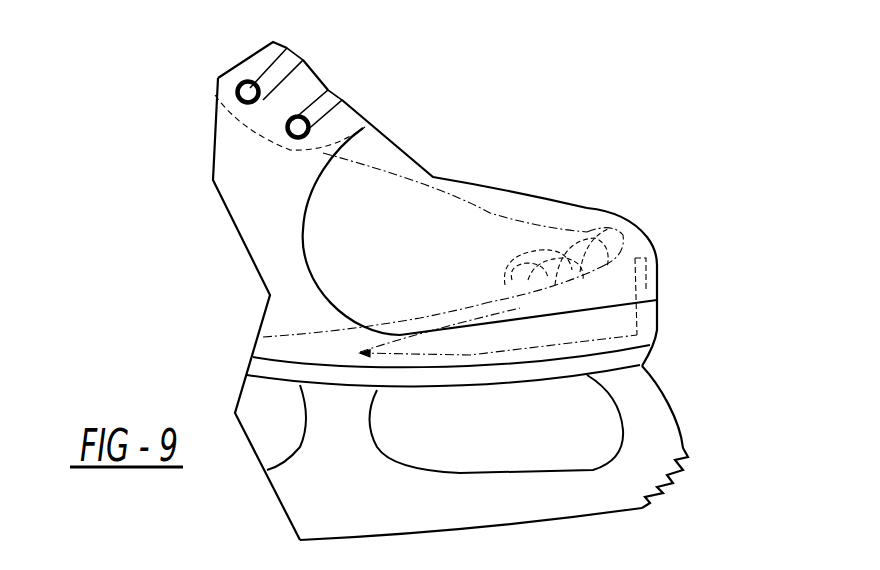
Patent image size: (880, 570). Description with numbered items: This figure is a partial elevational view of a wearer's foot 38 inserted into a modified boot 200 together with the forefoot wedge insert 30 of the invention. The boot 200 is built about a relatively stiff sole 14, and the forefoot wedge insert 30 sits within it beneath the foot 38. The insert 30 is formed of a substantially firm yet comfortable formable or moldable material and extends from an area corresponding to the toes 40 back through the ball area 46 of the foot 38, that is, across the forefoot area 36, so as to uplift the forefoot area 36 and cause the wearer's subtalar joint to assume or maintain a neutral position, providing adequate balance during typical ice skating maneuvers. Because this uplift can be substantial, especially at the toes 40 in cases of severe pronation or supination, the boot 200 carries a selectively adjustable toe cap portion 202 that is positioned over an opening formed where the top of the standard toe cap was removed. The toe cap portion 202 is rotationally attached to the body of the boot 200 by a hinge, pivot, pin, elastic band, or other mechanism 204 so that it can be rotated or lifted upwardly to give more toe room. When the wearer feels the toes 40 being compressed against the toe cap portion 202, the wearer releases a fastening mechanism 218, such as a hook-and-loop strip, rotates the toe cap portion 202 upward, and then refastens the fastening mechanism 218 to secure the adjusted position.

The modified boot 200 is at (388, 98).
The wearer's foot 38 is at (387, 162).
The forefoot area 36 is at (420, 203).
The toe cap portion 202 is at (527, 177).
The toes 40 is at (598, 218).
The forefoot wedge insert 30 is at (637, 240).
The fastening mechanism 218 is at (657, 275).
The hinge, pivot, pin, elastic band, or other mechanism 204 is at (295, 203).
The ball area 46 is at (382, 315).
The sole 14 is at (500, 397).